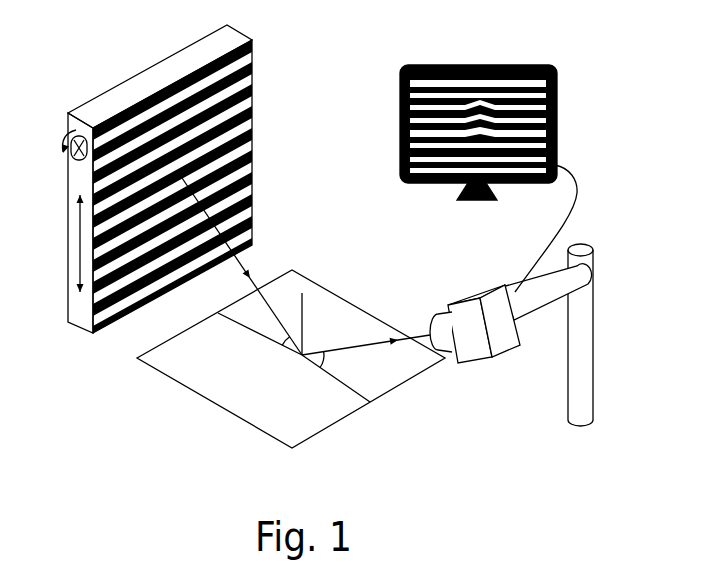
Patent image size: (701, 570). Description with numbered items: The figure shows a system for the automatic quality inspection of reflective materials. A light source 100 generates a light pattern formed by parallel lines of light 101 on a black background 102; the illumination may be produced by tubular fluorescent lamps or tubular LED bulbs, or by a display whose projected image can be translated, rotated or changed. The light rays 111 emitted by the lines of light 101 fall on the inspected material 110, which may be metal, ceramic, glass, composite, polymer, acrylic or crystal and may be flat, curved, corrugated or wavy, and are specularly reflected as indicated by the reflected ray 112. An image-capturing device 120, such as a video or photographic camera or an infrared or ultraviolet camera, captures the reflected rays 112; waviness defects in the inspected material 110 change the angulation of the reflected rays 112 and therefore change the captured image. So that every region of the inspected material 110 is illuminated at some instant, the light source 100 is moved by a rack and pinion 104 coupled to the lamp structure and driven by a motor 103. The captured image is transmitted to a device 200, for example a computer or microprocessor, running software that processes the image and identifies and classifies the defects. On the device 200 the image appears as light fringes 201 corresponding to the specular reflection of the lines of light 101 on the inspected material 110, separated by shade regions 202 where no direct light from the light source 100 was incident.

The light source 100 is at (240, 33).
The parallel lines of light 101 is at (252, 86).
The black background 102 is at (247, 131).
The motor 103 is at (68, 158).
The rack and pinion 104 is at (68, 176).
The inspected material 110 is at (175, 383).
The light rays 111 is at (245, 263).
The reflected ray 112 is at (370, 349).
The image-capturing device 120 is at (498, 358).
The device 200 is at (402, 177).
The light fringes 201 is at (543, 93).
The shade regions 202 is at (557, 113).